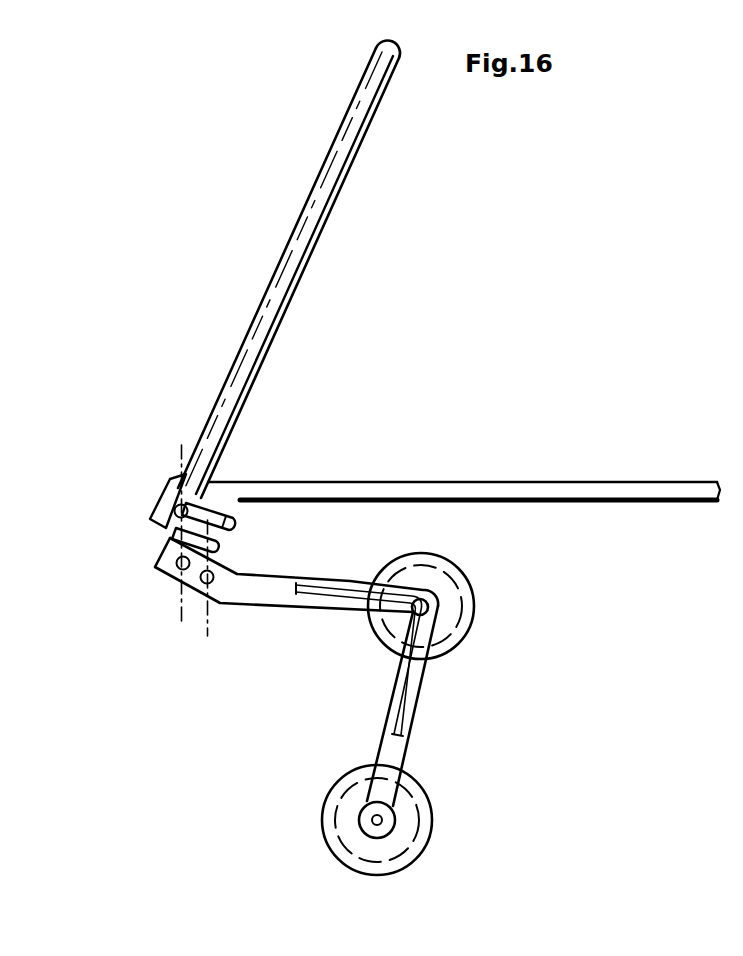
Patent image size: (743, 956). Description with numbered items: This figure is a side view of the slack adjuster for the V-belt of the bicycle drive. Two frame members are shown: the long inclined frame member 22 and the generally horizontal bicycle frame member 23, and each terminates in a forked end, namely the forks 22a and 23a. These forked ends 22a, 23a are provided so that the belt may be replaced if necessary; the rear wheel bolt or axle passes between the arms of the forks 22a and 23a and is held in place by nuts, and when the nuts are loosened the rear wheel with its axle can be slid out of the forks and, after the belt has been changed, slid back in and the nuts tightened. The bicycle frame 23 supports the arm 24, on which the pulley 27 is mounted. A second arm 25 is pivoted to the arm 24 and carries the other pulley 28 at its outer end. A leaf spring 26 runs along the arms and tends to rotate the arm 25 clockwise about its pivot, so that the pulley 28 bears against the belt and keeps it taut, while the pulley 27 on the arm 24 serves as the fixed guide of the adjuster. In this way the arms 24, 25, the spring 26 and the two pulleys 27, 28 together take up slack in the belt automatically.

The frame member 22 is at (330, 206).
The forked end 22a is at (165, 517).
The bicycle frame 23 is at (497, 488).
The forked end 23a is at (242, 522).
The arm 24 is at (274, 603).
The arm 25 is at (393, 762).
The leaf spring 26 is at (405, 692).
The pulley 27 is at (455, 598).
The pulley 28 is at (410, 815).